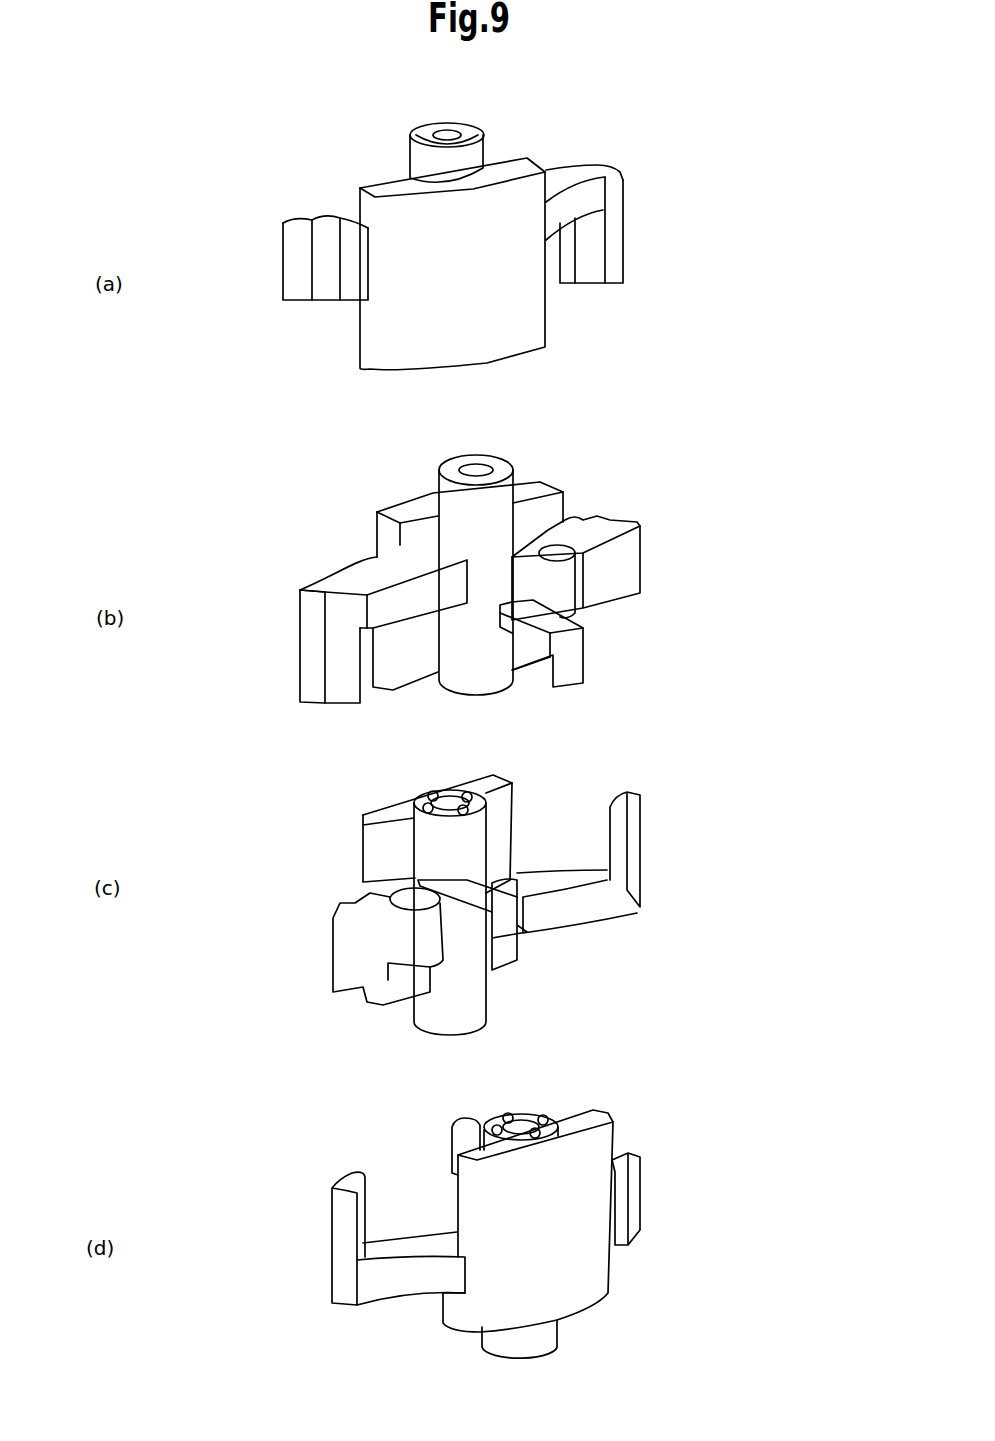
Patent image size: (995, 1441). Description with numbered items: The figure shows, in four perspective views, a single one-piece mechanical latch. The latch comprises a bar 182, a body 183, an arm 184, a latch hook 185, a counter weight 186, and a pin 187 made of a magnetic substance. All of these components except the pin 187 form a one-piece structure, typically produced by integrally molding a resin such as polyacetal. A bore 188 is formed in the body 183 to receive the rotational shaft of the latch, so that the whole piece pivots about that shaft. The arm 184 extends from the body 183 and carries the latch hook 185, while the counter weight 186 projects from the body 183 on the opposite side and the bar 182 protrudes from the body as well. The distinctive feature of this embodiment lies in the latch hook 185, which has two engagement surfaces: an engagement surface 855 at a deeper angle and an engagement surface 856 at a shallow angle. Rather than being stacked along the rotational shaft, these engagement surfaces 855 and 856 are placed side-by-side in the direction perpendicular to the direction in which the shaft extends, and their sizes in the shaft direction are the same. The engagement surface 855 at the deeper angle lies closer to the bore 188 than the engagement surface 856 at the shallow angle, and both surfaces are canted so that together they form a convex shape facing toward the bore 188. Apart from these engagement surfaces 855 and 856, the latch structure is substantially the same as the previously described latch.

The bar 182 is at (575, 665).
The body 183 is at (385, 337).
The arm 184 is at (568, 177).
The latch hook 185 is at (620, 222).
The counter weight 186 is at (328, 217).
The pin 187 is at (560, 558).
The bore 188 is at (448, 133).
The engagement surface at a deeper angle 855 is at (567, 265).
The engagement surface at a shallow angle 856 is at (590, 267).